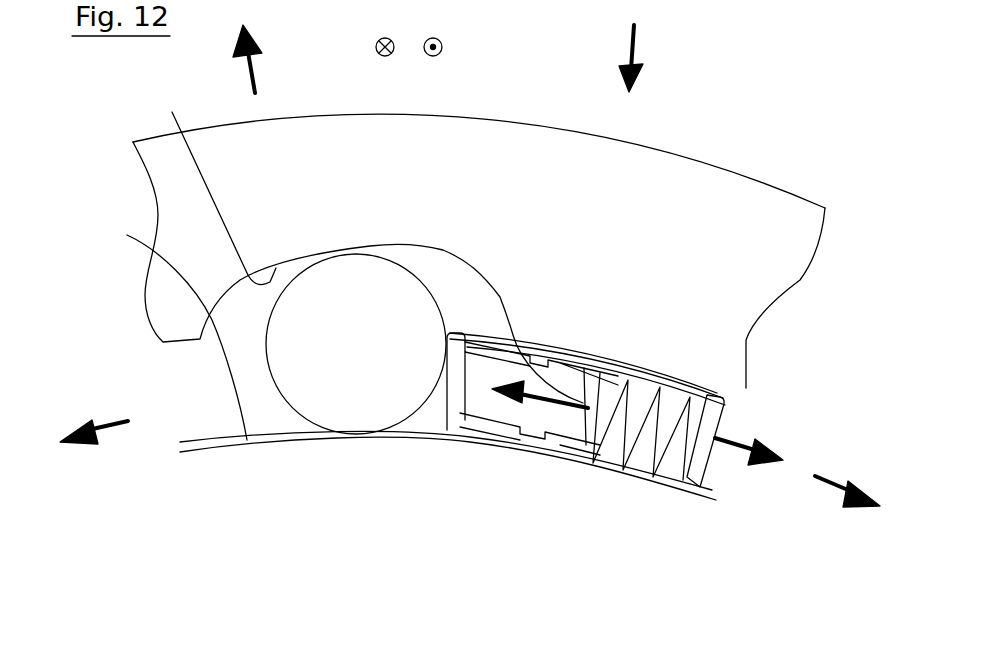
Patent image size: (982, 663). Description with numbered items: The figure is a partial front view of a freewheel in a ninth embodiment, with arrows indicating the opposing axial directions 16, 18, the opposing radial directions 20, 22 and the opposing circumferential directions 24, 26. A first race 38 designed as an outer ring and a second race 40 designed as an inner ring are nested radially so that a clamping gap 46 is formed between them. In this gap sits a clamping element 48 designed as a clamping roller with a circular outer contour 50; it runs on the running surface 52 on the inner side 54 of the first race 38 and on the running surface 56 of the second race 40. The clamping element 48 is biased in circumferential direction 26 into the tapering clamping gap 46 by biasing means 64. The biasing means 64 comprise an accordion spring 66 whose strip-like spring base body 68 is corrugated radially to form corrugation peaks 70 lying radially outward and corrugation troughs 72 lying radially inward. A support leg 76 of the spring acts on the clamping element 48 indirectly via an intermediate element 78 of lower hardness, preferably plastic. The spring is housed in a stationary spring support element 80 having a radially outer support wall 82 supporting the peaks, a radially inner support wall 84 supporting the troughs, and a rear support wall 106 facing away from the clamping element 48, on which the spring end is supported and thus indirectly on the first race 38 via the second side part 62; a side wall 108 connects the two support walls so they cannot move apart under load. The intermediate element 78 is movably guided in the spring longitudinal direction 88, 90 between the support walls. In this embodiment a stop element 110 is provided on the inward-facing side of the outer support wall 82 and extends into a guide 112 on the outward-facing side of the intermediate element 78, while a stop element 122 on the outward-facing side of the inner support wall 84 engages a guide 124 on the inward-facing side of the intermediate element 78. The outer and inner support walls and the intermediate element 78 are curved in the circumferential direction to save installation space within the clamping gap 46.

The axial direction 16 is at (444, 50).
The axial direction 18 is at (375, 50).
The radial direction 20 is at (252, 73).
The radial direction 22 is at (641, 76).
The circumferential direction 24 is at (836, 494).
The circumferential direction 26 is at (111, 436).
The first race 38 is at (170, 162).
The second race 40 is at (223, 468).
The clamping gap 46 is at (262, 405).
The clamping element 48 is at (348, 385).
The outer contour 50 is at (323, 432).
The running surface 52 is at (216, 183).
The inner side 54 is at (178, 350).
The running surface 56 is at (157, 330).
The second side part 62 is at (212, 418).
The biasing means 64 is at (440, 443).
The accordion spring 66 is at (704, 444).
The spring base body 68 is at (633, 437).
The corrugation peaks 70 is at (694, 397).
The corrugation troughs 72 is at (640, 380).
The support leg 76 is at (510, 330).
The intermediate element 78 is at (467, 382).
The spring support element 80 is at (706, 376).
The outer support wall 82 is at (584, 428).
The inner support wall 84 is at (670, 473).
The spring longitudinal direction 88 is at (740, 440).
The spring longitudinal direction 90 is at (527, 397).
The rear support wall 106 is at (707, 430).
The side wall 108 is at (672, 450).
The stop element 110 is at (543, 363).
The guide 112 is at (488, 353).
The stop element 122 is at (527, 425).
The guide 124 is at (483, 420).